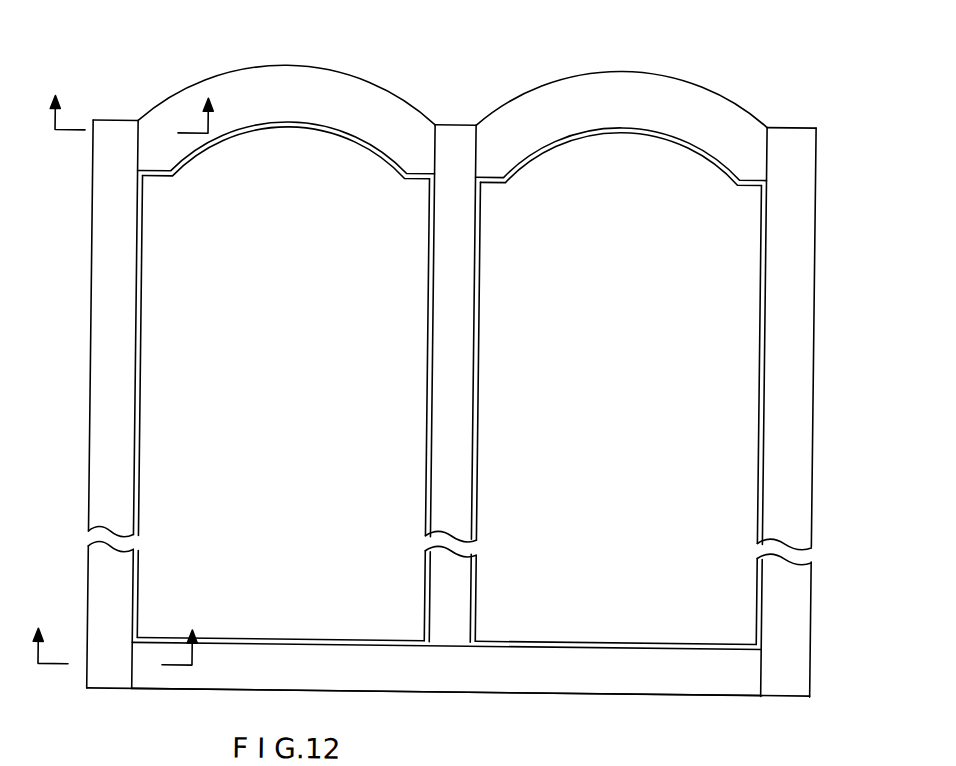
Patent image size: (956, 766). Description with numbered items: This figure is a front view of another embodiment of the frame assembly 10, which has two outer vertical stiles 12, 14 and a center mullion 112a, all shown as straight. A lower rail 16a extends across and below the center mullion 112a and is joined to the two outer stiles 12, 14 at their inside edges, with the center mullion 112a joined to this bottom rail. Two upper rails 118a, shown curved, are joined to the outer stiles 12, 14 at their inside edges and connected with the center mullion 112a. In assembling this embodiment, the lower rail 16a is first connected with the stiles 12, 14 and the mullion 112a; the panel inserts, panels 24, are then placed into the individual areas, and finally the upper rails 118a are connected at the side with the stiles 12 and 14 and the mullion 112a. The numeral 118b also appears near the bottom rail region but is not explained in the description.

The frame assembly 10 is at (138, 367).
The vertical side stile 12 is at (92, 447).
The vertical side stile 14 is at (814, 482).
The lower rail 16a is at (702, 687).
The panel 24 is at (306, 365).
The center mullion 112a is at (480, 503).
The upper rail 118a is at (290, 74).
The bottom rail 118b is at (446, 727).